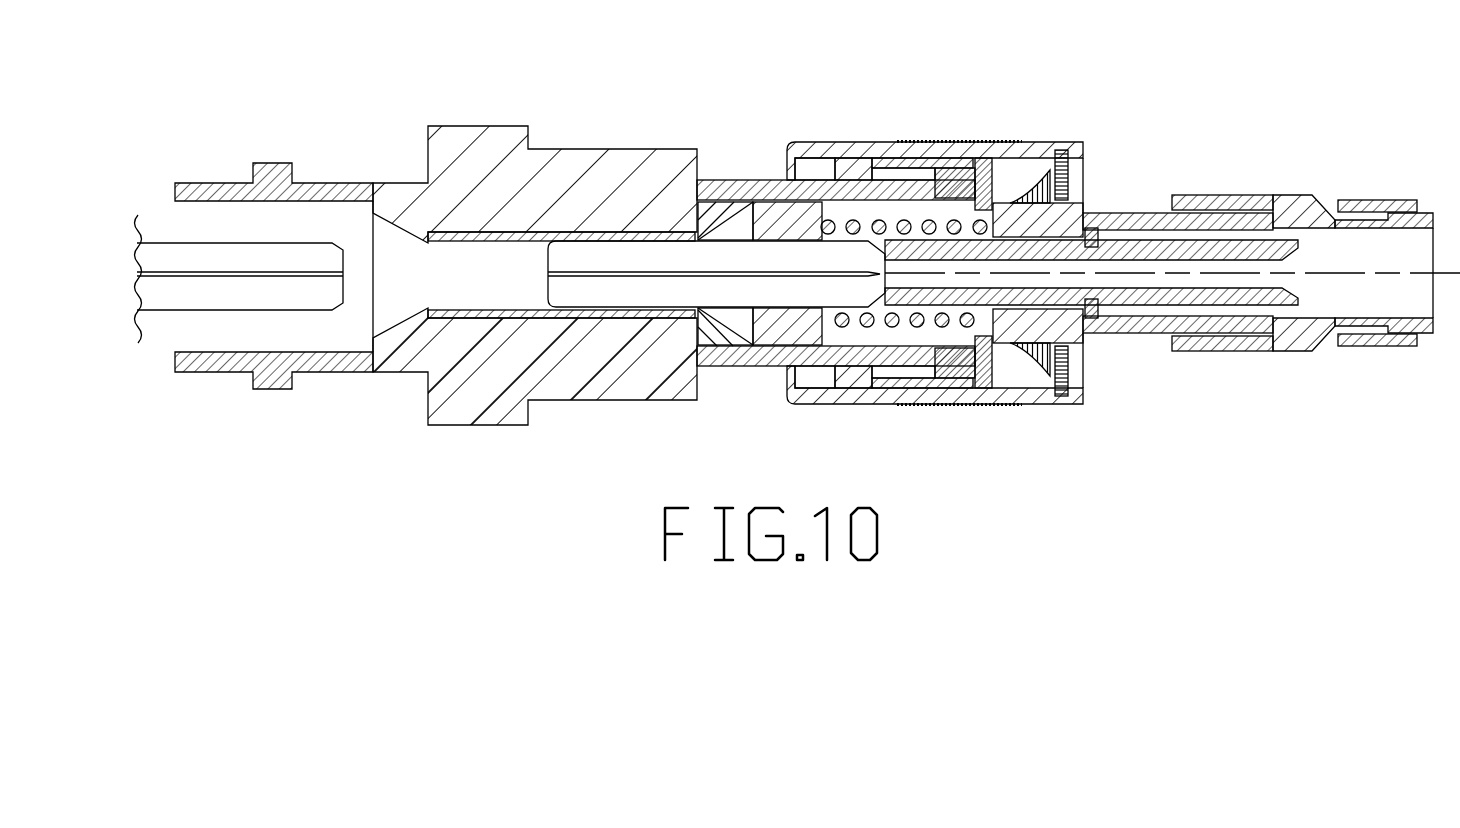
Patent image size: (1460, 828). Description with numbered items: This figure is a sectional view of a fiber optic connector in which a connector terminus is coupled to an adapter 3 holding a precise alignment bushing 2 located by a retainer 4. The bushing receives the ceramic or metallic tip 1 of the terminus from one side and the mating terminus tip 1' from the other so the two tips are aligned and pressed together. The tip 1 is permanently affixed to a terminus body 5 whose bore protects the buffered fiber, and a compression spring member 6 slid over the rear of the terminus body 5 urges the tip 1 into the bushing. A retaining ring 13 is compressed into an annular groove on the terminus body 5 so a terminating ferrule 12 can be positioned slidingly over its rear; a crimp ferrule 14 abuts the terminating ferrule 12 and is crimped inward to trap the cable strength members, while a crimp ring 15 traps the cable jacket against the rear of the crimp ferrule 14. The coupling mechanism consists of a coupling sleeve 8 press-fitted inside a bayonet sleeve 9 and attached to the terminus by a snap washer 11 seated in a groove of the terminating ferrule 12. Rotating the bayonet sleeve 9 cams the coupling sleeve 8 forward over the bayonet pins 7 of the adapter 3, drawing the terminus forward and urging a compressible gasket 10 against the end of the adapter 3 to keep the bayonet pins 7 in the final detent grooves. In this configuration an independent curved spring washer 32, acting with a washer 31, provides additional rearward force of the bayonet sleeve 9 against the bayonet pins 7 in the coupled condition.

The mating terminus tip 1' is at (254, 218).
The tip 1 is at (716, 172).
The alignment bushing 2 is at (464, 238).
The adapter 3 is at (648, 160).
The retainer 4 is at (720, 210).
The terminus body 5 is at (790, 330).
The spring member 6 is at (865, 325).
The bayonet pins 7 is at (852, 175).
The coupling sleeve 8 is at (897, 167).
The bayonet sleeve 9 is at (985, 157).
The compressible gasket 10 is at (963, 383).
The snap washer 11 is at (1008, 407).
The terminating ferrule 12 is at (1127, 327).
The retaining ring 13 is at (1092, 232).
The crimp ferrule 14 is at (1238, 197).
The crimp ring 15 is at (1380, 200).
The washer 31 is at (1063, 160).
The spring washer 32 is at (1043, 200).